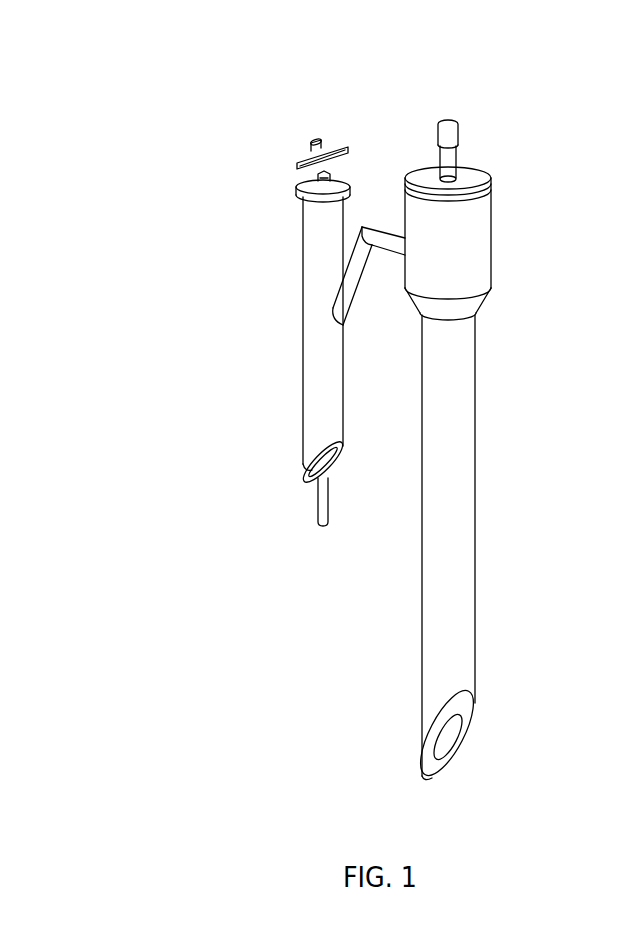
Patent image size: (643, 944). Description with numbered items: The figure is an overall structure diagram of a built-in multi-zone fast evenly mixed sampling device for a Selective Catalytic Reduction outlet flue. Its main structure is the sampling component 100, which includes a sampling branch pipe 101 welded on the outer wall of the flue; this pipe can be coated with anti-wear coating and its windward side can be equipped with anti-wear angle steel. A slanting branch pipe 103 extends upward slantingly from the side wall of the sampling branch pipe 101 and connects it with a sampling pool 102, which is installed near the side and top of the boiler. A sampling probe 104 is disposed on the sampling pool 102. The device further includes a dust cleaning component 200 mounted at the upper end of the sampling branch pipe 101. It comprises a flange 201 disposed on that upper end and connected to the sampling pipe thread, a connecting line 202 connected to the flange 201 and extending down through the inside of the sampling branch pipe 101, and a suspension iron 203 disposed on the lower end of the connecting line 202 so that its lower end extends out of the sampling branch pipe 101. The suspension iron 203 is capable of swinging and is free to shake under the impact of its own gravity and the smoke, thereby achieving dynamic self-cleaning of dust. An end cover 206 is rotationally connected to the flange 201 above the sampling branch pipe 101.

The sampling component 100 is at (430, 95).
The sampling branch pipe 101 is at (322, 357).
The sampling pool 102 is at (443, 318).
The slanting branch pipe 103 is at (351, 268).
The sampling probe 104 is at (453, 148).
The dust cleaning component 200 is at (142, 187).
The flange 201 is at (303, 181).
The connecting line 202 is at (313, 458).
The suspension iron 203 is at (318, 523).
The end cover 206 is at (307, 150).